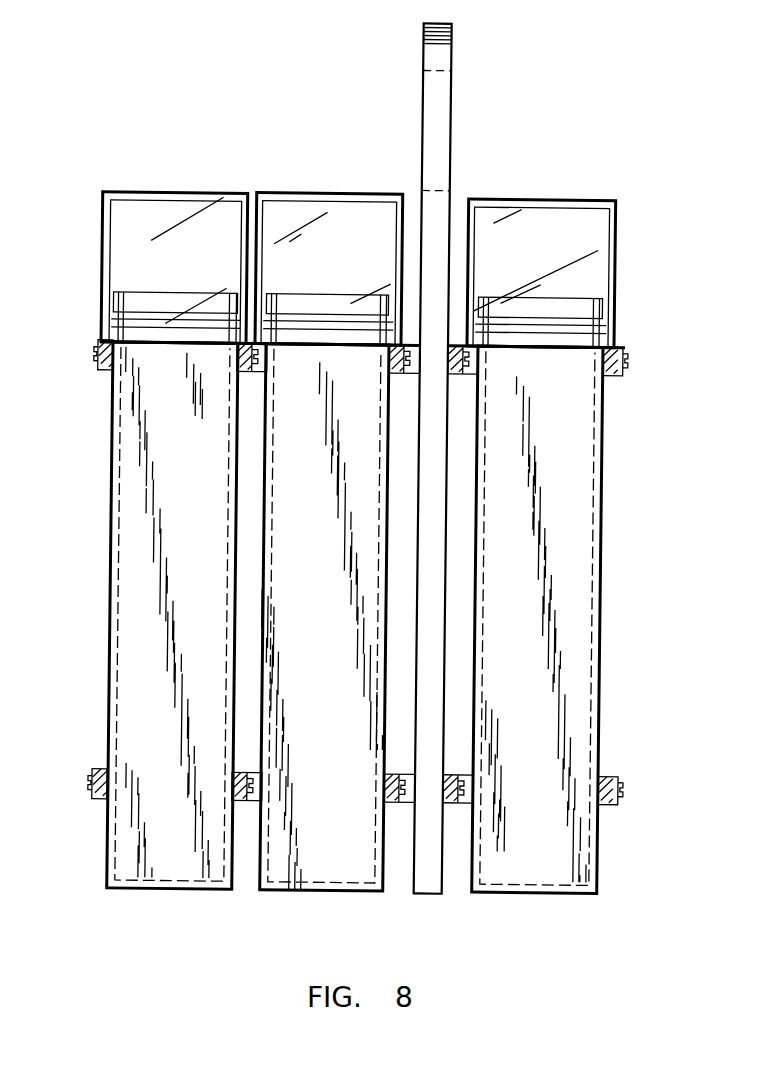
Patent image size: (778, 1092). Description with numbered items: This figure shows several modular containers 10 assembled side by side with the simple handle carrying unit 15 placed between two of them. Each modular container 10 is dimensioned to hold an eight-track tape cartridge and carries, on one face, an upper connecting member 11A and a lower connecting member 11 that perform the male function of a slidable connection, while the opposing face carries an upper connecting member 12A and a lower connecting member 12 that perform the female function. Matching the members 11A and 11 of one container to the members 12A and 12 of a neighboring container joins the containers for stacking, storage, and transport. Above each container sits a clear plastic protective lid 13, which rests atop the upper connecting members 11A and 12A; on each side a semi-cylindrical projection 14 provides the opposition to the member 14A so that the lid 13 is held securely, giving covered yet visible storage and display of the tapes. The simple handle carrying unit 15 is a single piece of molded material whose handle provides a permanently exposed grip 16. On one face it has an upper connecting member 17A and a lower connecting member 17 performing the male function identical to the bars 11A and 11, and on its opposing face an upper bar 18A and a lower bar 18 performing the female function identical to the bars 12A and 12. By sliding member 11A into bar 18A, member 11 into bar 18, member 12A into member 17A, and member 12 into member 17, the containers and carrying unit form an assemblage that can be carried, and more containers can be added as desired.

The modular container 10 is at (216, 890).
The lower connecting member 11 is at (238, 780).
The upper connecting member 11A is at (246, 373).
The lower connecting member 12 is at (92, 774).
The upper connecting member 12A is at (96, 347).
The clear plastic protective lid 13 is at (287, 196).
The semi-cylindrical projection 14 is at (137, 313).
The lid securing member 14A is at (151, 322).
The simple handle carrying unit 15 is at (428, 522).
The permanently exposed grip 16 is at (425, 56).
The lower connecting member 17 is at (444, 773).
The upper connecting member 17A is at (454, 374).
The lower bar 18 is at (408, 803).
The upper bar 18A is at (402, 374).